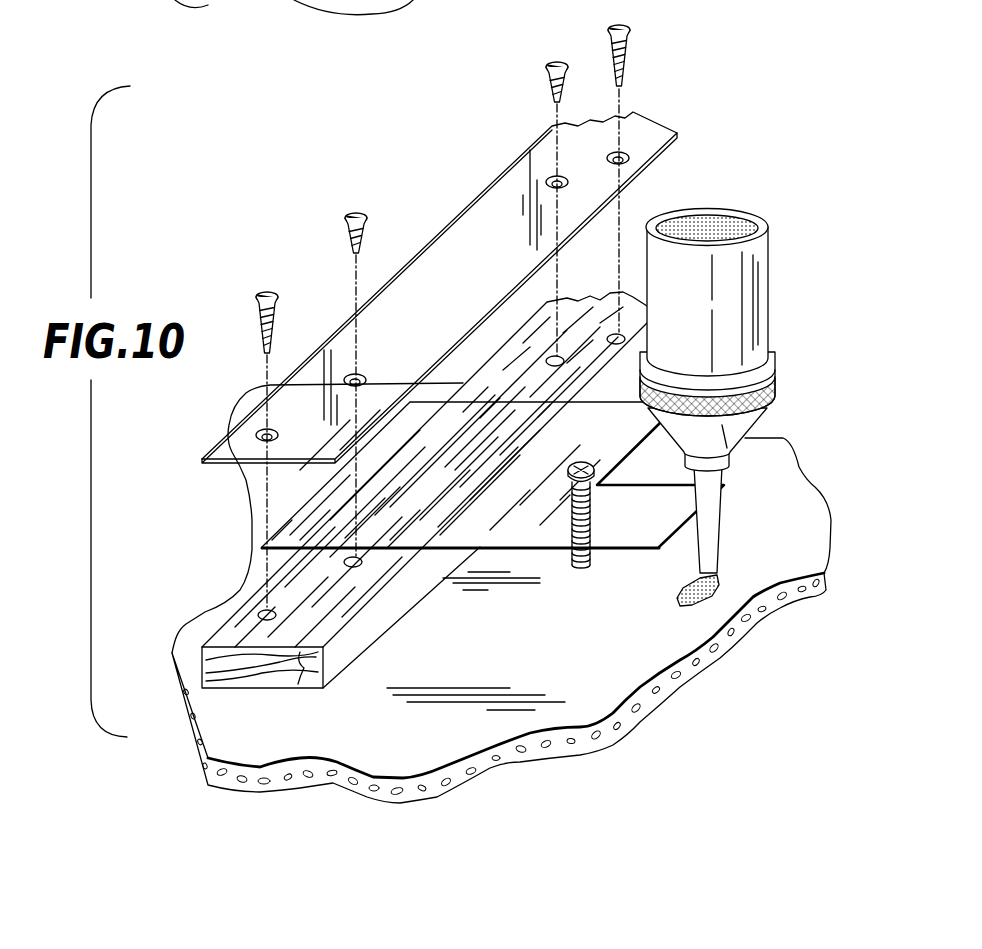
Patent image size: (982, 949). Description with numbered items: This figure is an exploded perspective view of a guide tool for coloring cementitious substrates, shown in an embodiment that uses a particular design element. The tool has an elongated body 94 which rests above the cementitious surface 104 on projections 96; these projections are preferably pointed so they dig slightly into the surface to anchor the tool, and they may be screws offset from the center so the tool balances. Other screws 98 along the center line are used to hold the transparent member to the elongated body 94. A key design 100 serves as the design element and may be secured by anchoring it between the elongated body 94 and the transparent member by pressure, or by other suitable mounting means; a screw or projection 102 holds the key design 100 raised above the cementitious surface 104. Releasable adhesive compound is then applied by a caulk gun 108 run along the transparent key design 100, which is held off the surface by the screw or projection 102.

The elongated body 94 is at (335, 666).
The projections 96 is at (269, 292).
The screws 98 is at (360, 213).
The key design 100 is at (488, 551).
The screw or projection 102 is at (583, 568).
The cementitious surface 104 is at (774, 480).
The caulk gun 108 is at (768, 258).